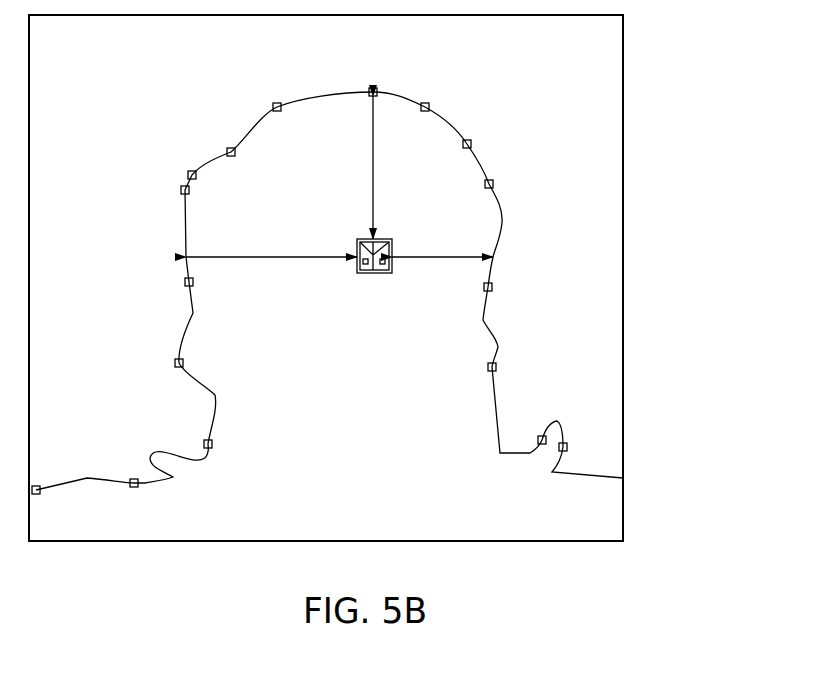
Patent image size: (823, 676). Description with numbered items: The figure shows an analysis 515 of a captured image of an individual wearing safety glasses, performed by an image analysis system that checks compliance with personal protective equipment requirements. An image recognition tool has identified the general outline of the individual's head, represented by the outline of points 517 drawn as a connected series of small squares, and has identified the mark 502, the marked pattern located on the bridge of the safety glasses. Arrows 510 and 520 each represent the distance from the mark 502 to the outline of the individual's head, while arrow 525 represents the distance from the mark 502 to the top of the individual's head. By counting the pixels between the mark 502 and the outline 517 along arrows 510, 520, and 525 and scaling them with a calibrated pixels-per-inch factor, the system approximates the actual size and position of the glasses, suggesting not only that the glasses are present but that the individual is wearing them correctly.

The analysis 515 is at (623, 116).
The outline of points 517 is at (90, 478).
The marked pattern 502 is at (370, 245).
The arrow 525 is at (375, 127).
The arrow 510 is at (303, 257).
The arrow 520 is at (432, 257).